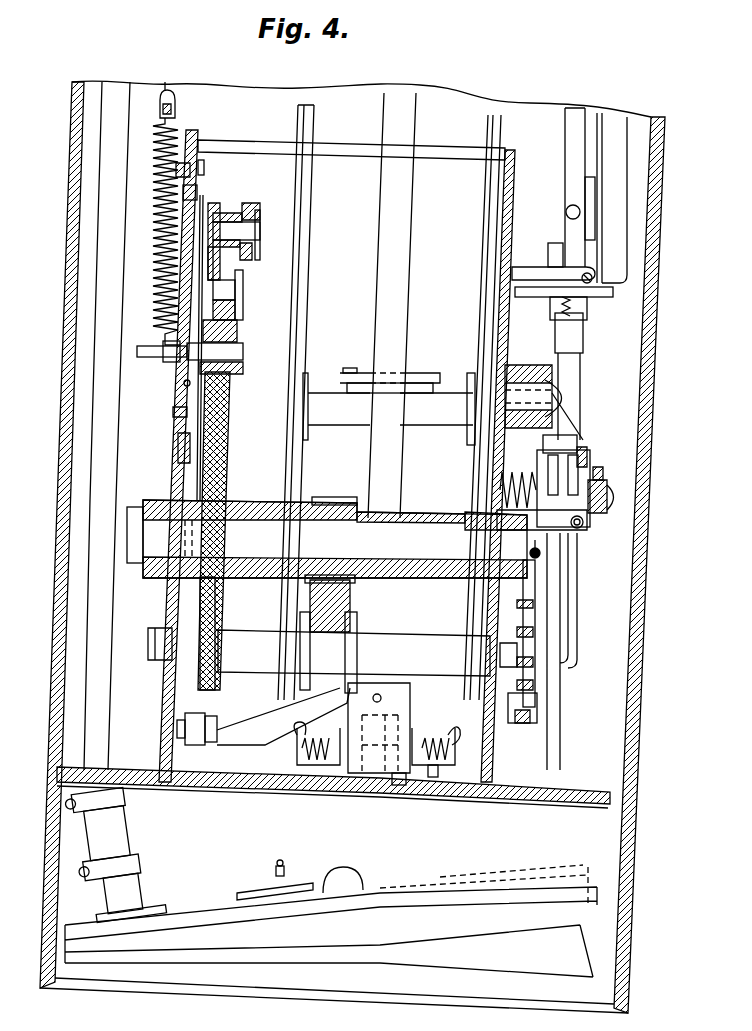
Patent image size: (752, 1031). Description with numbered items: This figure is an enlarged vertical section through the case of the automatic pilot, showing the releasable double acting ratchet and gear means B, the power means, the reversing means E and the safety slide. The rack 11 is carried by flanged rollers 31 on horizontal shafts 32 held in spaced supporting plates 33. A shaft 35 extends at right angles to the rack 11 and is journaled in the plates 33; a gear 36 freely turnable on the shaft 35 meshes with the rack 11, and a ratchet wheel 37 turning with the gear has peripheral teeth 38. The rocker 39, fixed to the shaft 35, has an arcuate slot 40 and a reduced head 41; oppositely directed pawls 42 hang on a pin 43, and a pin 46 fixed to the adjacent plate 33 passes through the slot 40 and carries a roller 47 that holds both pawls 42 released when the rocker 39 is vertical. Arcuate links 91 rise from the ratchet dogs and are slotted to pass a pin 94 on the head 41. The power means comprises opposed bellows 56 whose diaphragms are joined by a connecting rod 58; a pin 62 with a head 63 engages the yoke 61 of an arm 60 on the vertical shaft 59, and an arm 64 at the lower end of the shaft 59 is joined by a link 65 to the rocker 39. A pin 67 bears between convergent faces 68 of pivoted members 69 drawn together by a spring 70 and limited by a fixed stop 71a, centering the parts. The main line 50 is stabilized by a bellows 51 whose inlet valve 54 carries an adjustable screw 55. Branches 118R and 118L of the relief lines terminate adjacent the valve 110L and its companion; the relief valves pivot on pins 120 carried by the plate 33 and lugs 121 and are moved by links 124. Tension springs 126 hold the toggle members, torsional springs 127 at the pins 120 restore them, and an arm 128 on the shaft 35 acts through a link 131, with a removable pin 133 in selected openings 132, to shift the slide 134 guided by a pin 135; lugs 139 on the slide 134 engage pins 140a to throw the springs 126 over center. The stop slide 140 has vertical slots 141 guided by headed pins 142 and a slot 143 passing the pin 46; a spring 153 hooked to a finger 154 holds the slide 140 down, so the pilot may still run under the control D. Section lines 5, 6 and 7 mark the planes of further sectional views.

The section line 5— 5 is at (213, 58).
The section line 6— 6 is at (210, 117).
The section line 7— 7 is at (615, 125).
The rack 11 is at (345, 613).
The flanged rollers 31 is at (328, 652).
The horizontal shafts 32 is at (354, 653).
The supporting plates 33 is at (515, 155).
The shaft 35 is at (327, 539).
The pinion or gear 36 is at (328, 497).
The ratchet wheel 37 is at (225, 446).
The peripheral teeth 38 is at (212, 690).
The double lever or rocker 39 is at (257, 250).
The arcuate slot 40 is at (243, 370).
The reduced head 41 is at (215, 203).
The dogs or pawls 42 is at (240, 310).
The pin 43 is at (228, 293).
The pin 46 is at (225, 350).
The roller 47 is at (240, 338).
The main line 50 is at (110, 258).
The bellows 51 is at (331, 921).
The spring held valve 54 is at (270, 893).
The adjustable screw 55 is at (278, 868).
The bellows 56 is at (302, 265).
The connecting rod 58 is at (440, 415).
The vertical shaft 59 is at (395, 272).
The arm 60 is at (408, 388).
The yoke 61 is at (352, 390).
The pin 62 is at (395, 373).
The head 63 is at (348, 373).
The arm 64 is at (262, 735).
The link 65 is at (180, 712).
The pin 67 is at (352, 775).
The convergent faces 68 is at (415, 720).
The pivoted levers or members 69 is at (432, 777).
The spring 70 is at (440, 745).
The fixed stop 71a is at (398, 785).
The arcuate links 91 is at (263, 207).
The pin 94 is at (245, 228).
The valve 110L is at (553, 243).
The branch 118R is at (576, 256).
The branch 118L is at (560, 575).
The pins 120 is at (607, 485).
The lugs 121 is at (600, 472).
The links 124 is at (583, 343).
The extensible tension springs 126 is at (557, 310).
The torsional springs 127 is at (500, 470).
The arm 128 is at (530, 605).
The link 131 is at (525, 632).
The openings 132 is at (525, 688).
The removable pin 133 is at (527, 708).
The slide 134 is at (547, 372).
The pin 135 is at (560, 395).
The lugs 139 is at (545, 442).
The latch or stop slide 140 is at (97, 241).
The pins 140a is at (586, 458).
The vertical slots 141 is at (185, 193).
The headed pins 142 is at (205, 166).
The slot 143 is at (186, 383).
The extensible coiled spring 153 is at (158, 216).
The finger 154 is at (168, 92).
The means B is at (244, 201).
The control D is at (378, 834).
The means E is at (597, 444).